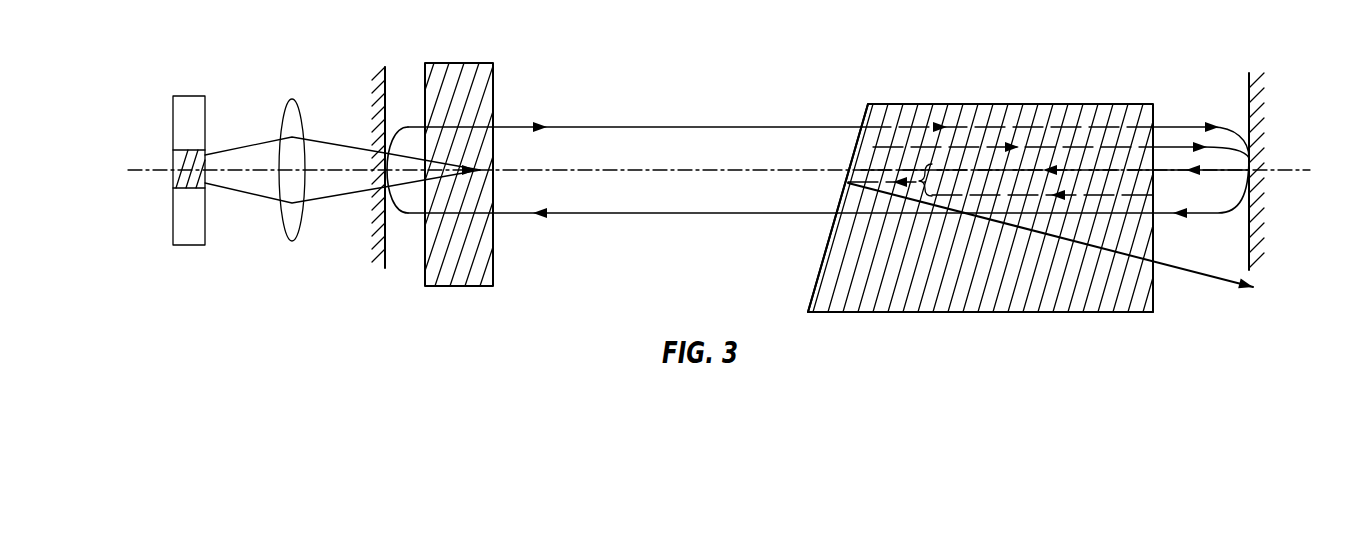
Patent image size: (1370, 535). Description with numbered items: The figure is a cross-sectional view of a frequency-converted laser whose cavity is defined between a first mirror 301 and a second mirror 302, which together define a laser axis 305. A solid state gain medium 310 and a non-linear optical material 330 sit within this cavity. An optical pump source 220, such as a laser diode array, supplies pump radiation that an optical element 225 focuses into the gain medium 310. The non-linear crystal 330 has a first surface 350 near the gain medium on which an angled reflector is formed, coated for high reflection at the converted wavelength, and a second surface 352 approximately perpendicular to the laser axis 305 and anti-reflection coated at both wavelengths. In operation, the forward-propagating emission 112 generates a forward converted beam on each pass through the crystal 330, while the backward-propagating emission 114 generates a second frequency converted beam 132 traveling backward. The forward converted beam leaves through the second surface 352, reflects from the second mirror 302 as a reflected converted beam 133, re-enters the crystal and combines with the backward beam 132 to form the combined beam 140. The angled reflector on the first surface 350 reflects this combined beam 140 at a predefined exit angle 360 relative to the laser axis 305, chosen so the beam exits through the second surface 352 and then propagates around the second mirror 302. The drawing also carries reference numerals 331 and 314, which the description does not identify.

The forward-propagating emission 112 is at (650, 125).
The backward-propagating emission 114 is at (623, 215).
The second frequency converted beam 132 is at (950, 183).
The reflected converted beam 133 is at (972, 168).
The combined beam 140 is at (913, 184).
The optical pump source 220 is at (185, 96).
The optical element 225 is at (290, 99).
The first mirror 301 is at (383, 72).
The second mirror 302 is at (1248, 90).
The laser axis 305 is at (140, 172).
The solid state gain medium 310 is at (473, 64).
The beam segment exiting crystal 314 is at (1162, 215).
The non-linear optical material 330 is at (1052, 105).
The beam path in crystal 331 is at (1140, 143).
The first surface 350 is at (853, 158).
The second surface 352 is at (1153, 287).
The exit angle 360 is at (880, 180).